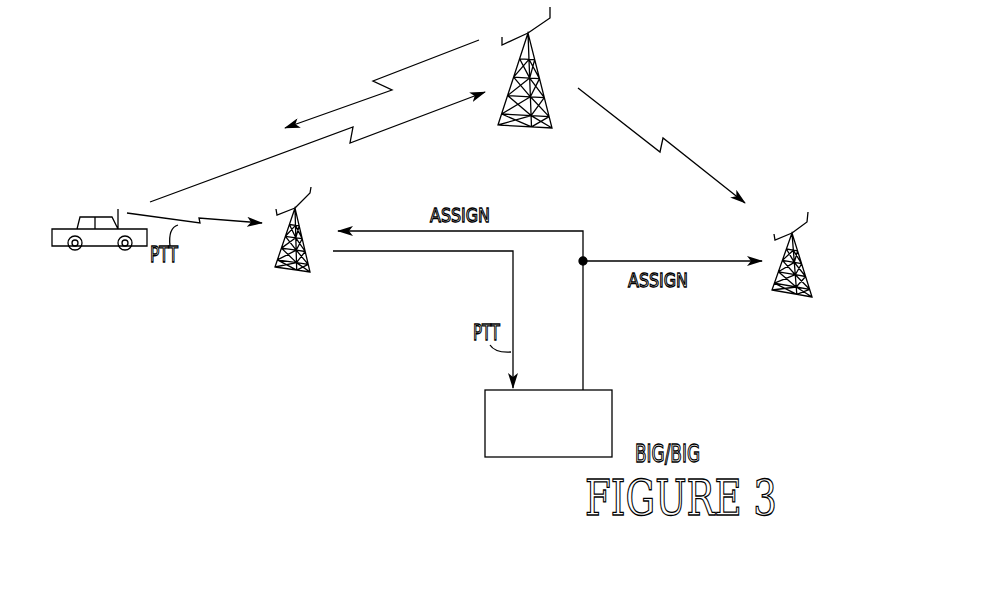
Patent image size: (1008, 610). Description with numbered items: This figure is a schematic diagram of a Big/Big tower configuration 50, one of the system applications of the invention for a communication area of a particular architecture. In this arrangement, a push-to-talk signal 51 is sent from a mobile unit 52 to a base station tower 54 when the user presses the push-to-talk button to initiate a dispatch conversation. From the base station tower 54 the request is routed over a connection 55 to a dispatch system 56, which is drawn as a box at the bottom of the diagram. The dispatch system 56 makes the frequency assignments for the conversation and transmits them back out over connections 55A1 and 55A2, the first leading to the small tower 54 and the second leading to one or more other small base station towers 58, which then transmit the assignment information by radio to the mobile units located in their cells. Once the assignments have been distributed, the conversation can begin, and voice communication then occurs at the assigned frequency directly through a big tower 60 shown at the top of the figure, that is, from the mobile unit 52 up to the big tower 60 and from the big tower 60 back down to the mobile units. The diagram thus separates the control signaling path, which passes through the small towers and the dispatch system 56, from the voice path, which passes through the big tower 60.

The Big/Big tower configuration 50 is at (616, 195).
The push-to-talk (PTT) signal 51 is at (238, 222).
The mobile unit 52 is at (62, 246).
The base station tower 54 is at (303, 228).
The connection 55 is at (445, 252).
The connection 55A1 is at (513, 230).
The connection 55A2 is at (646, 259).
The dispatch system 56 is at (500, 460).
The small (base station) towers 58 is at (808, 253).
The big tower 60 is at (545, 80).